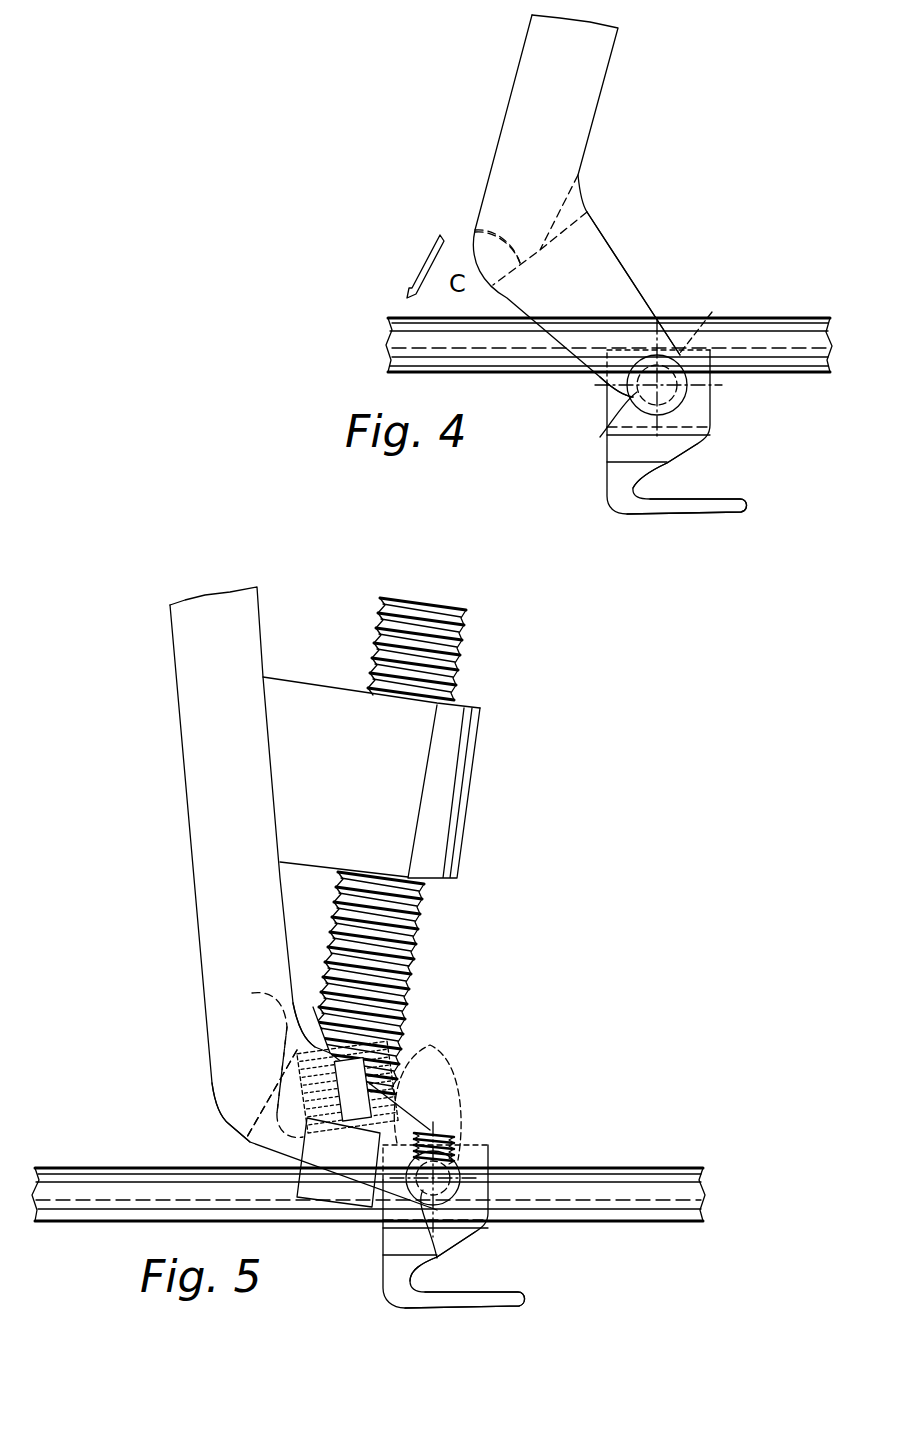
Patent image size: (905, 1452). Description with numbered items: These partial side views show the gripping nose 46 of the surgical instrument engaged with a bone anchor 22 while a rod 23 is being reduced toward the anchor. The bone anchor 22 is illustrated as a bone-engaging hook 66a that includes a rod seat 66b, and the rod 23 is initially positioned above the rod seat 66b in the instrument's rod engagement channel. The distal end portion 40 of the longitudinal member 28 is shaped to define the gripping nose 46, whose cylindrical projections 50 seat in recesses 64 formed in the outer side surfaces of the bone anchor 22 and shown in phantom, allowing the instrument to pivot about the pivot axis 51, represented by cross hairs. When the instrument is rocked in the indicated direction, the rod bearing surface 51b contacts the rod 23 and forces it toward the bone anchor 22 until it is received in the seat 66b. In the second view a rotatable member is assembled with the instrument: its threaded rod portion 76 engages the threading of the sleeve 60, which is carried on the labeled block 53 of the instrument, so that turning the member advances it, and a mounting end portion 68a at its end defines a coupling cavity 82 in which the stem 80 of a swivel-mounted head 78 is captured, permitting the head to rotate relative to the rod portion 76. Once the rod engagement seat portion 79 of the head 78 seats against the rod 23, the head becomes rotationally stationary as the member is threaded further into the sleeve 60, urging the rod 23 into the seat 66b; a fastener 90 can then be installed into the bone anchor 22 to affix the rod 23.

In FIG. 4, the bone anchor 22 is at (723, 435).
In FIG. 5, the bone anchor 22 is at (373, 1280).
In FIG. 4, the rod 23 is at (760, 342).
In FIG. 5, the rod 23 is at (622, 1193).
In FIG. 4, the longitudinal member 28 is at (500, 52).
In FIG. 5, the longitudinal member 28 is at (158, 596).
In FIG. 4, the distal end portion 40 is at (608, 332).
In FIG. 5, the distal end portion 40 is at (322, 1047).
In FIG. 4, the gripping nose 46 is at (614, 362).
In FIG. 5, the gripping nose 46 is at (250, 1141).
In FIG. 4, the cylindrical projections 50 is at (637, 392).
In FIG. 5, the cylindrical projections 50 is at (437, 1258).
In FIG. 4, the pivot axis 51 is at (688, 375).
In FIG. 5, the pivot axis 51 is at (487, 1163).
In FIG. 4, the rod bearing surface 51b is at (476, 232).
In FIG. 5, the rod bearing surface 51b is at (262, 995).
In FIG. 5, the clamp block 53 is at (310, 682).
In FIG. 5, the sleeve 60 is at (440, 818).
In FIG. 4, the recess 64 is at (712, 318).
In FIG. 5, the recess 64 is at (432, 1124).
In FIG. 4, the bone-engaging hook 66a is at (710, 514).
In FIG. 5, the bone-engaging hook 66a is at (483, 1308).
In FIG. 4, the rod seat 66b is at (672, 440).
In FIG. 5, the rod seat 66b is at (467, 1237).
In FIG. 5, the mounting end portion 68a is at (417, 922).
In FIG. 5, the rod portion 76 is at (460, 690).
In FIG. 5, the swivel-mounted head 78 is at (272, 1102).
In FIG. 5, the rod engagement seat portion 79 is at (345, 1212).
In FIG. 5, the stem 80 is at (413, 1053).
In FIG. 5, the coupling cavity 82 is at (415, 1062).
In FIG. 5, the fastener 90 is at (450, 1133).